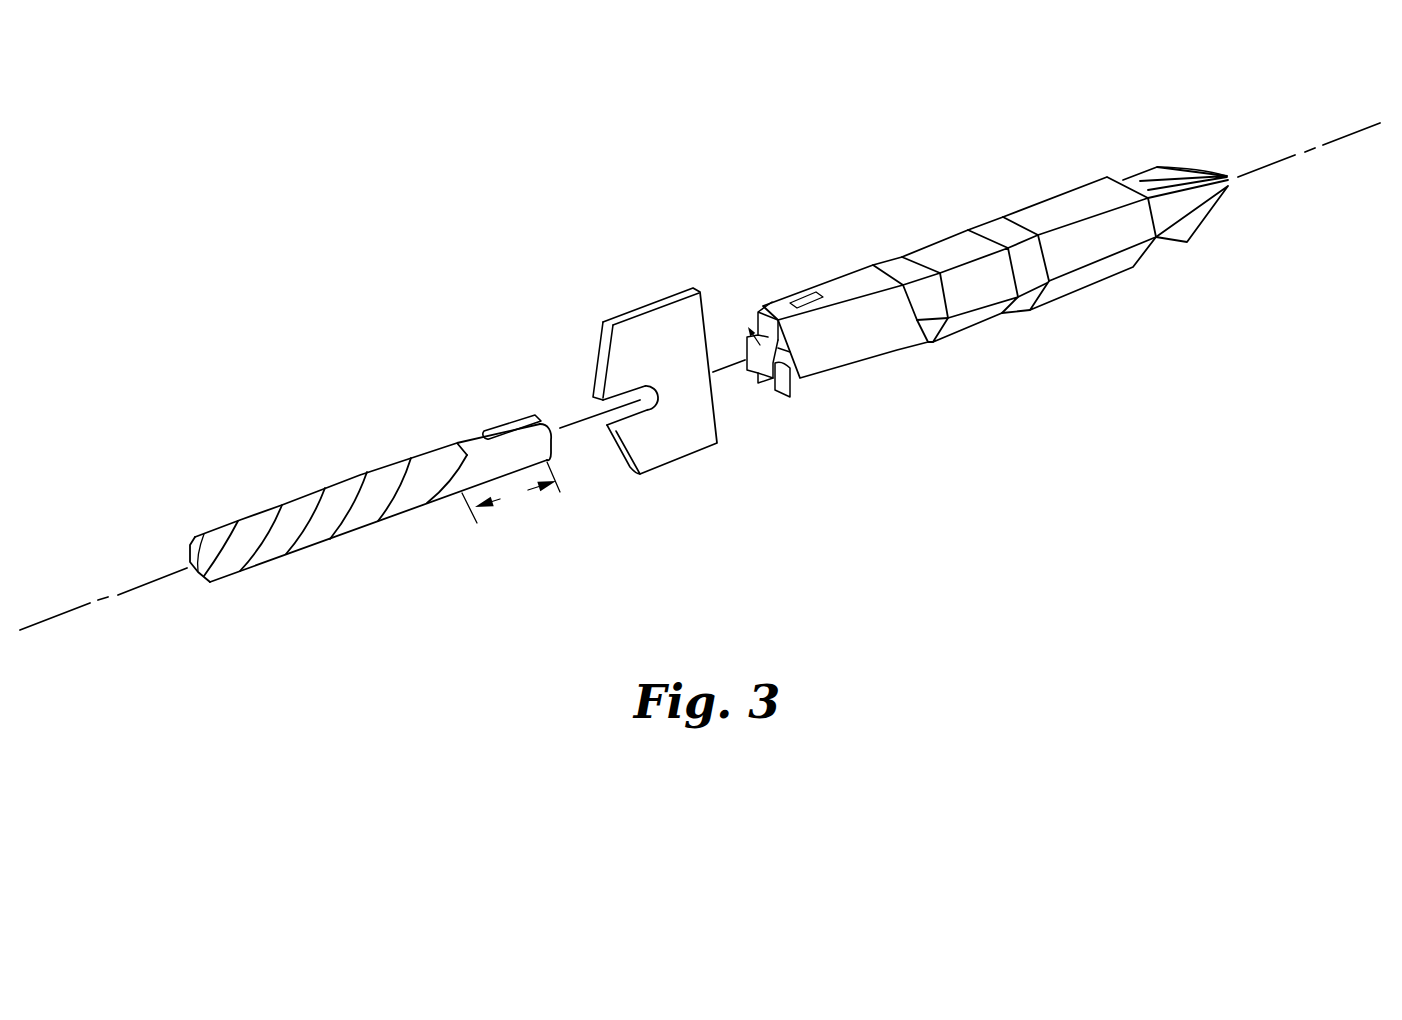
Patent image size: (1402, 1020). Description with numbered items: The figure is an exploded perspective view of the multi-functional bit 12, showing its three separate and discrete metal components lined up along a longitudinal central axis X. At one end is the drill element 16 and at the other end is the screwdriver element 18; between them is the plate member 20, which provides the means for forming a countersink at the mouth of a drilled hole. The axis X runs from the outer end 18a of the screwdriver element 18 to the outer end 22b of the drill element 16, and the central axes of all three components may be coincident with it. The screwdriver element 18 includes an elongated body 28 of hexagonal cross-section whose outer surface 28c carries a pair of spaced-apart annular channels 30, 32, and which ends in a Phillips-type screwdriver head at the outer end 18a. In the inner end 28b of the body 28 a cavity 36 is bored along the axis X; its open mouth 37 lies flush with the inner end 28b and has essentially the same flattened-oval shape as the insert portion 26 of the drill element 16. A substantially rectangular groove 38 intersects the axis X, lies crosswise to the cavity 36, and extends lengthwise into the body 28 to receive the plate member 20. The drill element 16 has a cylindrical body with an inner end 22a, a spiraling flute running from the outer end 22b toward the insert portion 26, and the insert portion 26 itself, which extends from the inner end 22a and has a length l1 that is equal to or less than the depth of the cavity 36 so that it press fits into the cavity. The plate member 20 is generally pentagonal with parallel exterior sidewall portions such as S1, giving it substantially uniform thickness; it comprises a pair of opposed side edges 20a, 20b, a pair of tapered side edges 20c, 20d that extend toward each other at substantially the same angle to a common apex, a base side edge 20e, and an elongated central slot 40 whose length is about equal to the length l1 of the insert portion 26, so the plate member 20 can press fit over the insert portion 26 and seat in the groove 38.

The multi-functional bit 12 is at (1007, 306).
The drill element 16 is at (375, 494).
The screwdriver element 18 is at (1209, 252).
The outer end of the screwdriver element 18a is at (1213, 213).
The plate member 20 is at (647, 380).
The side edge 20a is at (670, 297).
The side edge 20b is at (688, 457).
The tapered side edge 20c is at (600, 343).
The tapered side edge 20d is at (623, 467).
The base side edge 20e is at (708, 325).
The inner end of the cylindrical body 22a is at (540, 418).
The outer end of the drill element 22b is at (227, 572).
The insert portion 26 is at (482, 430).
The elongated body 28 is at (1079, 277).
The inner end of the body 28b is at (802, 393).
The outer surface of the elongated body 28c is at (1063, 255).
The annular channel 30 is at (985, 232).
The annular channel 32 is at (823, 328).
The cavity 36 is at (747, 326).
The open mouth 37 is at (743, 378).
The groove 38 is at (770, 390).
The central slot 40 is at (600, 407).
The exterior sidewall portion S1 is at (657, 448).
The longitudinal central axis X is at (1290, 157).
The length of the insert portion l1 is at (511, 492).